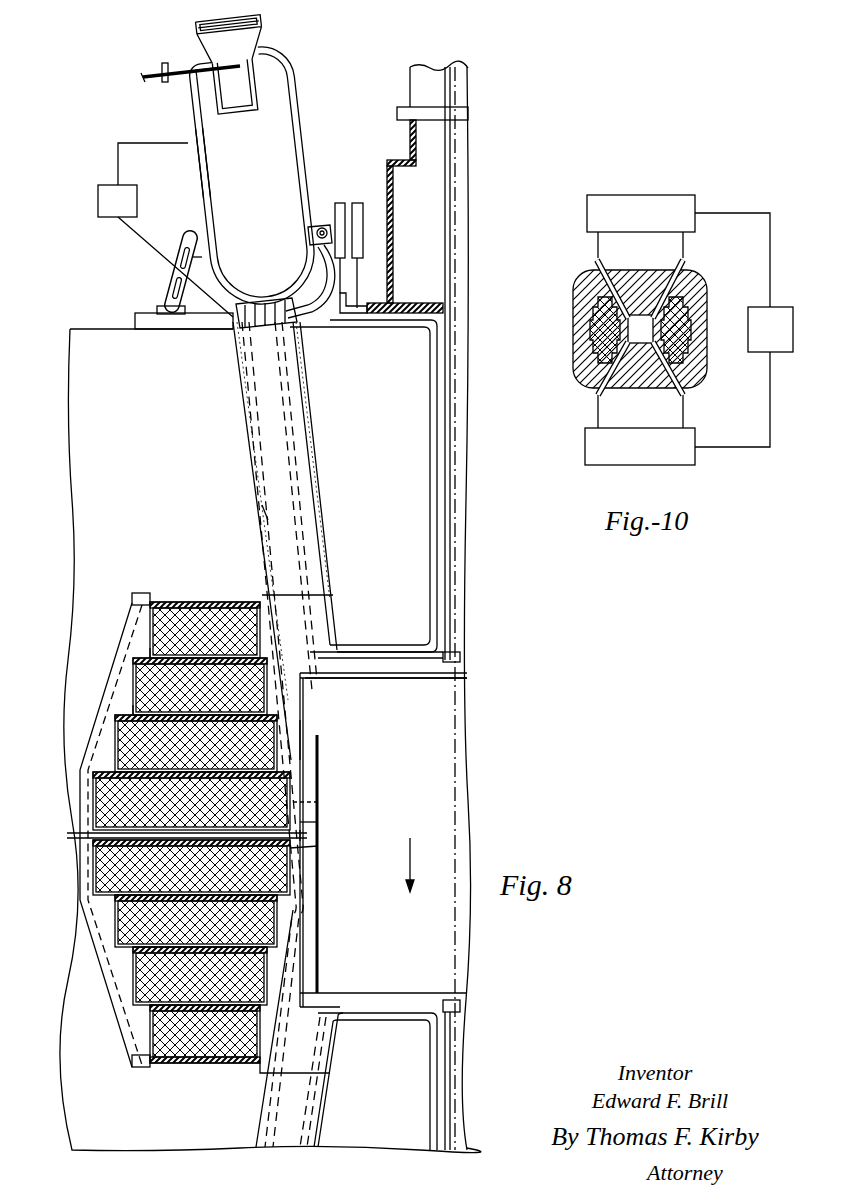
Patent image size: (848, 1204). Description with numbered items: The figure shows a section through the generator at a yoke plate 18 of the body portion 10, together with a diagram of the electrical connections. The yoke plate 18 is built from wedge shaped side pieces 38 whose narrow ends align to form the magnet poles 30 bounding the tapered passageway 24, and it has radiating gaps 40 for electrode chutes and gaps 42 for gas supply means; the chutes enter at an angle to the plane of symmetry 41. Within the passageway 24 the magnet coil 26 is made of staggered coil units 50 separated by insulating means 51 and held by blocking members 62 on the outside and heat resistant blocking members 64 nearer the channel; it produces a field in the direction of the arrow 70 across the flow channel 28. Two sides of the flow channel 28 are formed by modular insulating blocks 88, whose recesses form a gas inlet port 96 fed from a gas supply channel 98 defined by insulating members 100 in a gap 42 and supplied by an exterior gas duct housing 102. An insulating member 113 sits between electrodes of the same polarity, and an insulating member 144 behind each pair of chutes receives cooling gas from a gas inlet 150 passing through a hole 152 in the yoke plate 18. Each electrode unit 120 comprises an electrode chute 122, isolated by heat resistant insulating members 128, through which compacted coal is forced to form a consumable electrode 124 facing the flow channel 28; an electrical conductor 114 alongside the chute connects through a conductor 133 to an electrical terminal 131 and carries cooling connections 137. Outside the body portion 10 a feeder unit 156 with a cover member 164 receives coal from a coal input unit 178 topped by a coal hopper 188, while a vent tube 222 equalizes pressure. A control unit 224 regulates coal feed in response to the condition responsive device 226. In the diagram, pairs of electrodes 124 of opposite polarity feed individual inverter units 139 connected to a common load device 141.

In FIG. 8, the yoke plate 18 is at (90, 330).
In FIG. 8, the cover member 164 is at (290, 110).
In FIG. 8, the feeder unit 156 is at (192, 125).
In FIG. 8, the coal input unit 178 is at (270, 52).
In FIG. 8, the coal hopper 188 is at (262, 28).
In FIG. 8, the vent tube 222 is at (152, 70).
In FIG. 8, the electrode unit 120 is at (196, 210).
In FIG. 8, the control unit 224 is at (60, 207).
In FIG. 8, the electrical terminal 131 is at (322, 228).
In FIG. 8, the conductor 133 is at (313, 323).
In FIG. 8, the cooling connections 137 is at (357, 203).
In FIG. 8, the wedge shaped side piece 38 is at (413, 333).
In FIG. 8, the gas duct housing 102 is at (410, 135).
In FIG. 8, the gap 42 is at (440, 428).
In FIG. 8, the insulating member 100 is at (447, 500).
In FIG. 8, the gas inlet port 96 is at (450, 655).
In FIG. 8, the plane of symmetry 41 is at (456, 740).
In FIG. 8, the gas supply channel 98 is at (457, 545).
In FIG. 8, the flow channel 28 is at (398, 809).
In FIG. 10, the flow channel 28 is at (632, 337).
In FIG. 8, the insulating block 88 is at (468, 668).
In FIG. 8, the passageway 24 is at (97, 745).
In FIG. 8, the magnet pole 30 is at (372, 658).
In FIG. 8, the electrical conductor 114 is at (312, 515).
In FIG. 8, the electrode chute 122 is at (262, 470).
In FIG. 8, the heat resistant insulating member 128 is at (250, 430).
In FIG. 8, the gap 40 is at (262, 512).
In FIG. 8, the magnet coil 26 is at (182, 607).
In FIG. 10, the magnet coil 26 is at (590, 335).
In FIG. 8, the blocking member 64 is at (264, 600).
In FIG. 8, the blocking member 62 is at (128, 612).
In FIG. 8, the coil unit 50 is at (156, 655).
In FIG. 8, the insulating means 51 is at (133, 700).
In FIG. 8, the hole 152 is at (42, 859).
In FIG. 8, the insulating member 113 is at (322, 736).
In FIG. 8, the consumable electrode 124 is at (322, 770).
In FIG. 10, the consumable electrode 124 is at (680, 262).
In FIG. 8, the condition responsive device 226 is at (320, 802).
In FIG. 8, the gas inlet 150 is at (317, 826).
In FIG. 8, the insulating member 144 is at (303, 850).
In FIG. 8, the arrow 70 is at (412, 872).
In FIG. 10, the inverter unit 139 is at (632, 195).
In FIG. 10, the load device 141 is at (755, 352).
In FIG. 10, the body portion 10 is at (708, 300).